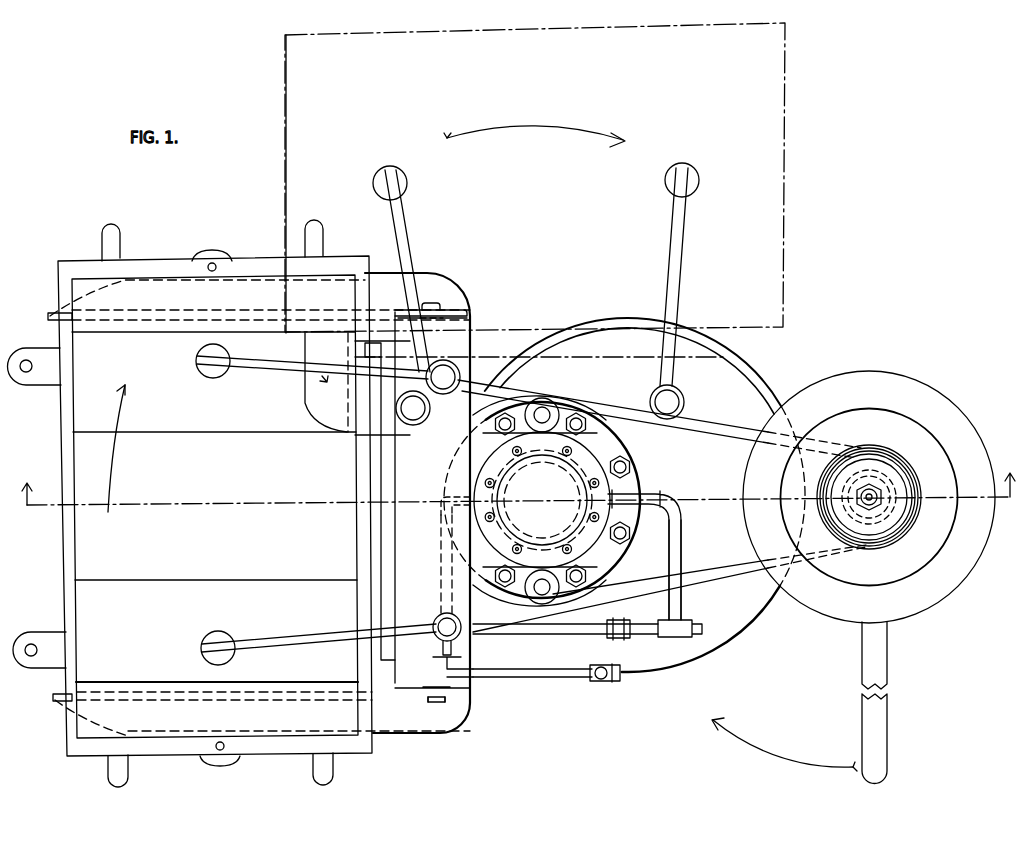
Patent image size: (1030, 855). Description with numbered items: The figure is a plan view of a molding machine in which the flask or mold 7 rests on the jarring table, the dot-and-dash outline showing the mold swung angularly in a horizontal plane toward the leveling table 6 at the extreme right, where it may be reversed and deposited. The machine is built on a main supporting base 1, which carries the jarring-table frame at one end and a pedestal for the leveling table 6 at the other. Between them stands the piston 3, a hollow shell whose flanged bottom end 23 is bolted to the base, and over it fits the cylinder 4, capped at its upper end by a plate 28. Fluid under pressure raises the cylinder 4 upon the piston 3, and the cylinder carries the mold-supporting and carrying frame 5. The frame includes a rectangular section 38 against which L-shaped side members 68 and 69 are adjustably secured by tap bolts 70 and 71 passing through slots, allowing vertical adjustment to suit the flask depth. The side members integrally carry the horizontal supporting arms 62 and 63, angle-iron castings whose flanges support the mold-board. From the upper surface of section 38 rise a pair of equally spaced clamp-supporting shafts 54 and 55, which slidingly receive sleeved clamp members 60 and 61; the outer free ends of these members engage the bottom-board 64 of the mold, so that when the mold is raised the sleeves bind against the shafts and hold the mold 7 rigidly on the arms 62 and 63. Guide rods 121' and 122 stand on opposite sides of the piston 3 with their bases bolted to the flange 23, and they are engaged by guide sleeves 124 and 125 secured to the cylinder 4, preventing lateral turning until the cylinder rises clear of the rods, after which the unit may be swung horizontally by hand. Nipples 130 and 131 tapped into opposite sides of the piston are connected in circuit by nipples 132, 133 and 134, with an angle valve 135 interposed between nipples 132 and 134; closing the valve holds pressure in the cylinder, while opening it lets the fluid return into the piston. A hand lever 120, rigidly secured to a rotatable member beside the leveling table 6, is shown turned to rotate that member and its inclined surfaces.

The main supporting base 1 is at (731, 466).
The piston 3 is at (515, 496).
The cylinder 4 is at (620, 486).
The mold-supporting and carrying frame 5 is at (418, 461).
The leveling table 6 is at (908, 374).
The flask or mold 7 is at (130, 243).
The flanged bottom end 23 is at (626, 445).
The plate 28 is at (556, 548).
The frame section 38 is at (452, 340).
The clamp-supporting shaft 54 is at (461, 374).
The clamp-supporting shaft 55 is at (436, 614).
The sleeved clamp member 60 is at (257, 370).
The sleeved clamp member 61 is at (294, 632).
The supporting arm 62 is at (61, 311).
The supporting arm 63 is at (58, 701).
The bottom-board 64 is at (118, 368).
The L-shaped side member 68 is at (455, 308).
The L-shaped side member 69 is at (456, 698).
The tap bolt 70 is at (433, 302).
The tap bolt 71 is at (430, 698).
The hand lever 120 is at (890, 718).
The guide rod 121' is at (552, 399).
The guide rod 122 is at (524, 596).
The guide sleeve 124 is at (552, 402).
The guide sleeve 125 is at (574, 574).
The nipple 130 is at (666, 493).
The nipple 131 is at (441, 483).
The nipple 132 is at (438, 555).
The nipple 133 is at (684, 540).
The nipple 134 is at (570, 628).
The angle valve 135 is at (437, 667).